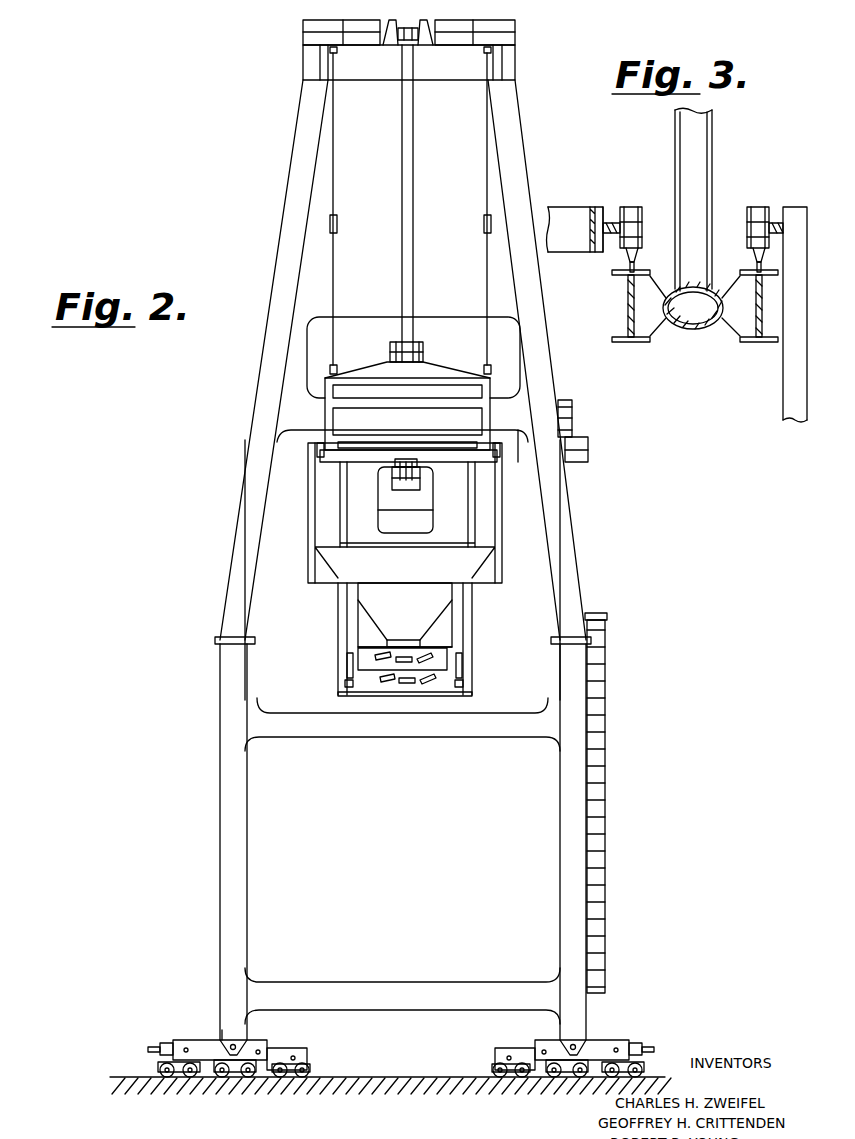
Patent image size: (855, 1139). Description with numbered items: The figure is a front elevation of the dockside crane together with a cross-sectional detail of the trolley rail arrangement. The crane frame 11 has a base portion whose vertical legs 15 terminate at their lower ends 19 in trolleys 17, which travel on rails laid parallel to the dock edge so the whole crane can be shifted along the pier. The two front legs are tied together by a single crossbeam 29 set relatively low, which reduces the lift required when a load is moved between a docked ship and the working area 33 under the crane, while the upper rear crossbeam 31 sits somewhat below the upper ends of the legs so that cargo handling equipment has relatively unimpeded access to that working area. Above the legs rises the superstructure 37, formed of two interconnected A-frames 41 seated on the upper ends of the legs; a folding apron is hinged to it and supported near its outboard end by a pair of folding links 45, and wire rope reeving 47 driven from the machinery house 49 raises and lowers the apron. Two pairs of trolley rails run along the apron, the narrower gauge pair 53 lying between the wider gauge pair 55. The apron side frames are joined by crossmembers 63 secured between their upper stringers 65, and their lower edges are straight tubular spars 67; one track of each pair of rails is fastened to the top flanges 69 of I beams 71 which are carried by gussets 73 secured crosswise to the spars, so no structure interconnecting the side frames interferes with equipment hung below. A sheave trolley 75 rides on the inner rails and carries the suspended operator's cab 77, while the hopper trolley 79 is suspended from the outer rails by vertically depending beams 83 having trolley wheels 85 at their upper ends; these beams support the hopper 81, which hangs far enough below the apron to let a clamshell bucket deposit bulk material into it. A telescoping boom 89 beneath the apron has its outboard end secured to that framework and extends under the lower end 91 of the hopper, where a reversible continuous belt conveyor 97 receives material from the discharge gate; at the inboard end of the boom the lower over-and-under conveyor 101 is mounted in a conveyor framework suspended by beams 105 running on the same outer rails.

In FIG. 2, the crane frame 11 is at (207, 604).
In FIG. 2, the vertical legs 15 is at (246, 800).
In FIG. 2, the trolleys 17 is at (255, 1045).
In FIG. 2, the lower ends 19 is at (222, 1034).
In FIG. 2, the crossbeam 29 is at (398, 978).
In FIG. 2, the upper rear crossbeam 31 is at (398, 740).
In FIG. 2, the working area 33 is at (410, 1043).
In FIG. 2, the superstructure 37 is at (462, 247).
In FIG. 2, the A-frames 41 is at (303, 116).
In FIG. 2, the folding links 45 is at (335, 138).
In FIG. 2, the wire rope reeving 47 is at (401, 200).
In FIG. 2, the machinery house 49 is at (462, 344).
In FIG. 3, the narrower gauge trolley rails 53 is at (636, 256).
In FIG. 3, the wider gauge trolley rails 55 is at (754, 256).
In FIG. 2, the crossmembers 63 is at (413, 381).
In FIG. 2, the upper stringers 65 is at (328, 407).
In FIG. 3, the tubular spars 67 is at (694, 331).
In FIG. 3, the top flanges 69 is at (628, 275).
In FIG. 3, the I beams 71 is at (627, 325).
In FIG. 3, the gussets 73 is at (657, 323).
In FIG. 2, the sheave trolley 75 is at (380, 443).
In FIG. 3, the sheave trolley 75 is at (558, 212).
In FIG. 2, the operator's cab 77 is at (380, 517).
In FIG. 2, the hopper trolley 79 is at (538, 572).
In FIG. 2, the hopper 81 is at (430, 600).
In FIG. 2, the vertically depending beams 83 is at (312, 540).
In FIG. 3, the vertically depending beams 83 is at (785, 400).
In FIG. 2, the trolley wheels 85 is at (318, 455).
In FIG. 3, the trolley wheels 85 is at (748, 212).
In FIG. 2, the telescoping boom 89 is at (470, 694).
In FIG. 2, the lower end of the hopper 91 is at (447, 637).
In FIG. 2, the reversible continuous belt conveyor 97 is at (365, 655).
In FIG. 2, the over-and-under conveyor 101 is at (380, 678).
In FIG. 2, the beams 105 is at (340, 513).